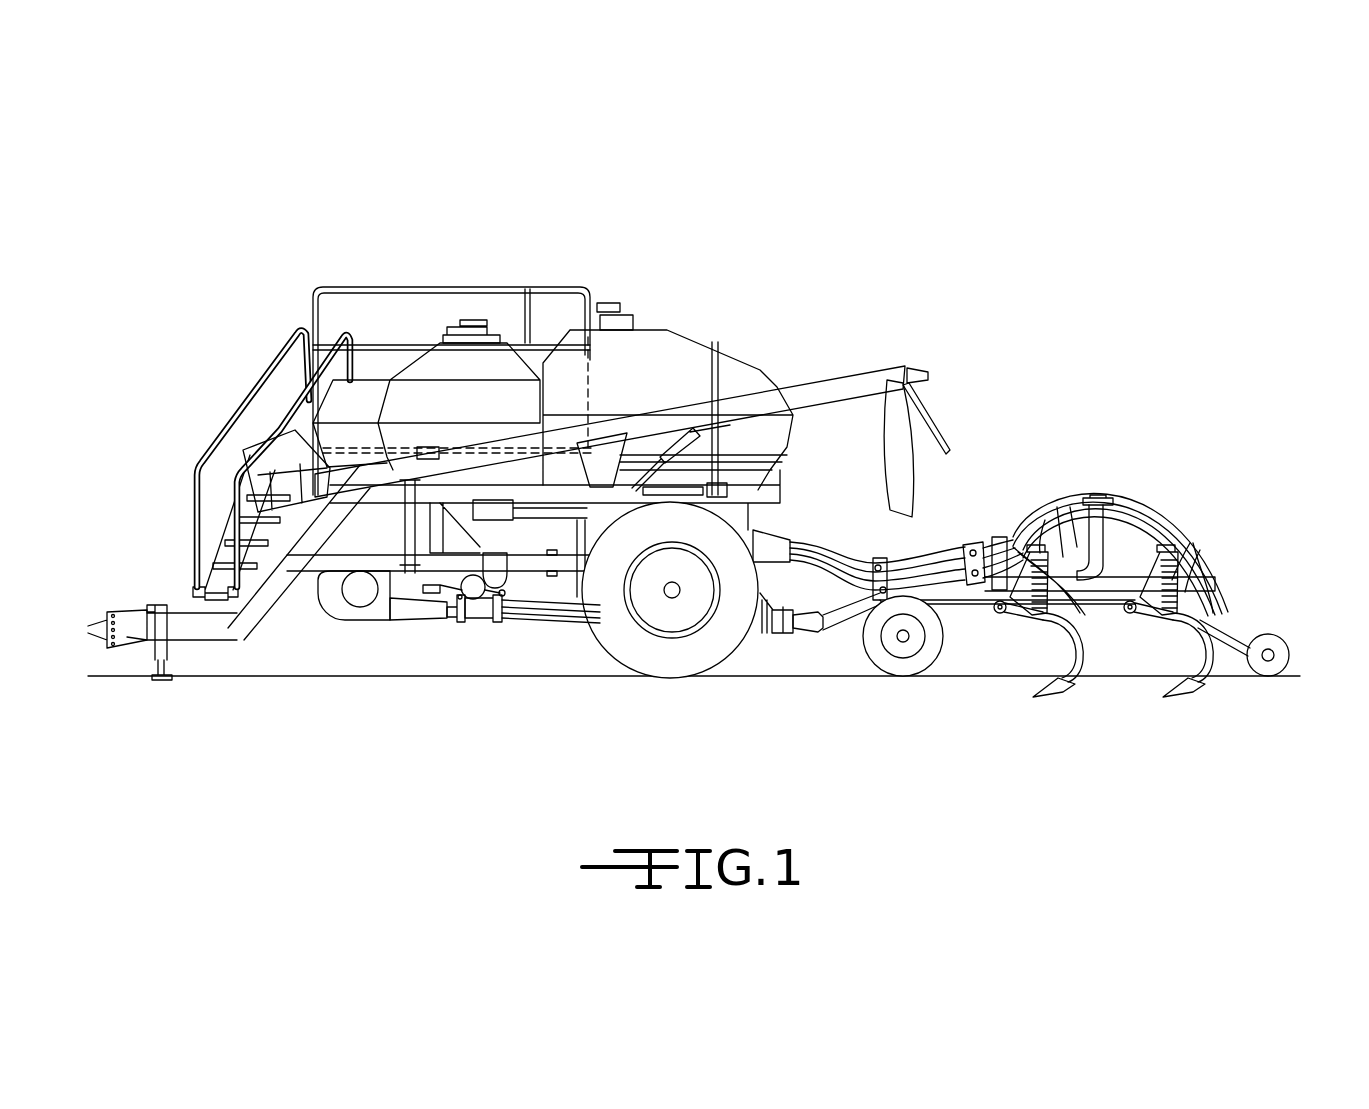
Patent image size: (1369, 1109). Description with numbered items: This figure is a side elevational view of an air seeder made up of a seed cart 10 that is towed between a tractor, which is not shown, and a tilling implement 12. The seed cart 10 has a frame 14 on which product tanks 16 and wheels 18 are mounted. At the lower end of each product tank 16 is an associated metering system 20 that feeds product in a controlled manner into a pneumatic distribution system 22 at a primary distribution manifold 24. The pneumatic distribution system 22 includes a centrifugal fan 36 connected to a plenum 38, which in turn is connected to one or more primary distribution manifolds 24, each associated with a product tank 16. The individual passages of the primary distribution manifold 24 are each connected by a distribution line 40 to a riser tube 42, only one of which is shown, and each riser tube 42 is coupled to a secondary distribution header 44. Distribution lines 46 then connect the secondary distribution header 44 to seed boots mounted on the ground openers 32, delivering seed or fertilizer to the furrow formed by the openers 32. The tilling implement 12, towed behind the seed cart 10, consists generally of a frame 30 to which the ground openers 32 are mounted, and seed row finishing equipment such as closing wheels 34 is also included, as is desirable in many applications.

The seed cart 10 is at (663, 238).
The tilling implement 12 is at (1118, 441).
The frame 14 is at (258, 600).
The product tanks 16 is at (398, 360).
The wheels 18 is at (700, 658).
The metering system 20 is at (485, 625).
The pneumatic distribution system 22 is at (437, 647).
The primary distribution manifold 24 is at (475, 626).
The frame 30 is at (1098, 590).
The ground openers 32 is at (1045, 700).
The closing wheels 34 is at (1268, 633).
The centrifugal fan 36 is at (355, 610).
The plenum 38 is at (410, 610).
The distribution line 40 is at (553, 610).
The riser tube 42 is at (1112, 540).
The secondary distribution header 44 is at (1105, 500).
The distribution lines 46 is at (1030, 543).